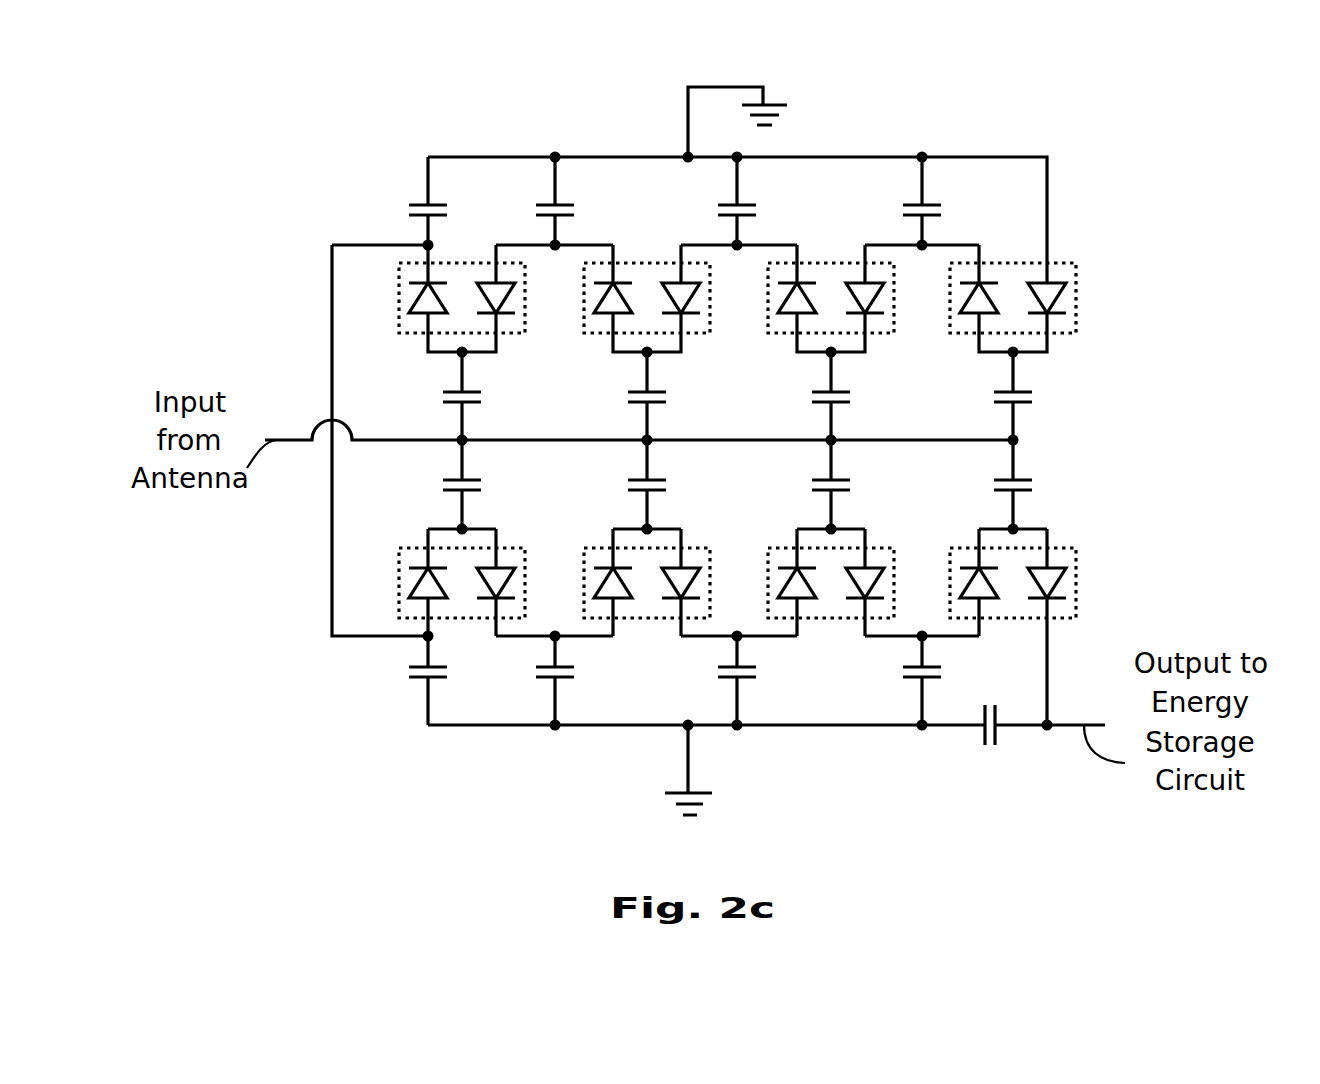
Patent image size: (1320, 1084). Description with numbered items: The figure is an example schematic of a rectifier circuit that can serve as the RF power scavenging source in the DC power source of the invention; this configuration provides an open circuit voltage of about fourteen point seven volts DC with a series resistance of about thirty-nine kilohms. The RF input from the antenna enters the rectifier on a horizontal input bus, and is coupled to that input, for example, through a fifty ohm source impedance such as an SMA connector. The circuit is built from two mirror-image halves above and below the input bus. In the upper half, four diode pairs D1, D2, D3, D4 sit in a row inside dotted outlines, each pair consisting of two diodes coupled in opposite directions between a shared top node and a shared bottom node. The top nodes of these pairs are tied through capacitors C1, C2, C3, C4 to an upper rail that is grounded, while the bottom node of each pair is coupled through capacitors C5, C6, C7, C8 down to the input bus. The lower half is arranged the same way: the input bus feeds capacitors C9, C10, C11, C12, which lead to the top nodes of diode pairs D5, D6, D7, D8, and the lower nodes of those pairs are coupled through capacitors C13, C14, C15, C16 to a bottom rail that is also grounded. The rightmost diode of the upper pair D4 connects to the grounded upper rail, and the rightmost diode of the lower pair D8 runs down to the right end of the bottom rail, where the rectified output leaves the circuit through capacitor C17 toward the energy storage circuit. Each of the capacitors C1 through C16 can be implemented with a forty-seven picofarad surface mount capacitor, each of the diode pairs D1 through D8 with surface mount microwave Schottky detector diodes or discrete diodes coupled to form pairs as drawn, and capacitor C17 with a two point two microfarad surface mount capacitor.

The capacitor C1 is at (407, 210).
The capacitor C2 is at (534, 210).
The capacitor C3 is at (716, 210).
The capacitor C4 is at (900, 210).
The capacitor C5 is at (483, 397).
The capacitor C6 is at (668, 397).
The capacitor C7 is at (851, 397).
The capacitor C8 is at (1034, 397).
The capacitor C9 is at (483, 485).
The capacitor C10 is at (677, 485).
The capacitor C11 is at (860, 485).
The capacitor C12 is at (1043, 485).
The capacitor C13 is at (400, 672).
The capacitor C14 is at (525, 672).
The capacitor C15 is at (707, 672).
The capacitor C16 is at (891, 672).
The capacitor C17 is at (988, 706).
The diode pair D1 is at (440, 298).
The diode pair D2 is at (625, 298).
The diode pair D3 is at (809, 298).
The diode pair D4 is at (991, 298).
The diode pair D5 is at (440, 583).
The diode pair D6 is at (625, 583).
The diode pair D7 is at (809, 583).
The diode pair D8 is at (991, 583).